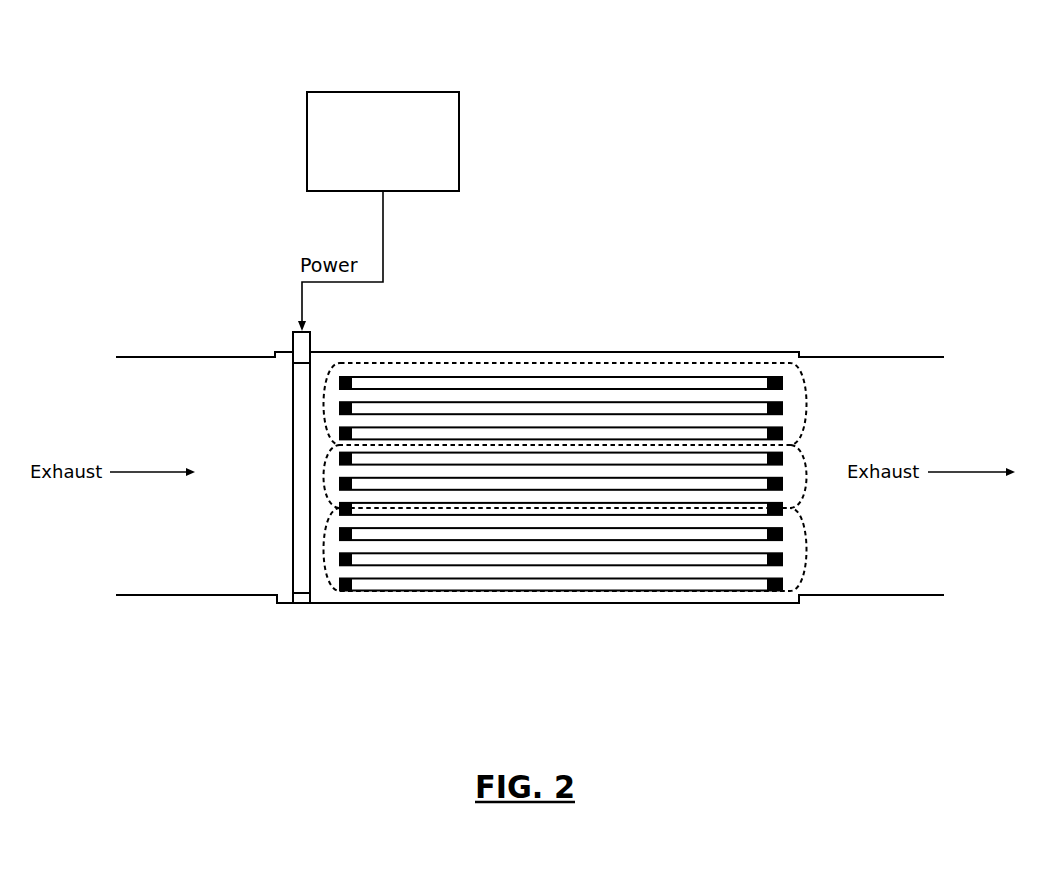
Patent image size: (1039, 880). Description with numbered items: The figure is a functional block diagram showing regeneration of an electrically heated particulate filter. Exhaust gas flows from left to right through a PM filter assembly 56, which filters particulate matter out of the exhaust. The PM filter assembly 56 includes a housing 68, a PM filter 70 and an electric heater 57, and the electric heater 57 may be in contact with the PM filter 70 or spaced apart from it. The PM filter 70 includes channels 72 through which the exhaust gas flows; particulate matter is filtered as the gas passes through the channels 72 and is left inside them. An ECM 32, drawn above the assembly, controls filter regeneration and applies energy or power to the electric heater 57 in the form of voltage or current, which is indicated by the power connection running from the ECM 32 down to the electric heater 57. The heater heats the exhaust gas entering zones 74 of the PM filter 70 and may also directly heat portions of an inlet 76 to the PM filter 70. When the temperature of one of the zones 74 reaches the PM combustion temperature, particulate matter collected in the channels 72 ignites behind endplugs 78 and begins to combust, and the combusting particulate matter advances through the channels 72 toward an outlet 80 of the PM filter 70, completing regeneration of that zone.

The ECM 32 is at (383, 92).
The particulate matter (PM) filter assembly 56 is at (494, 292).
The electric heater 57 is at (302, 408).
The housing 68 is at (628, 351).
The PM filter 70 is at (565, 592).
The channels 72 is at (440, 560).
The zones 74 is at (330, 493).
The inlet 76 is at (330, 468).
The endplugs 78 is at (335, 536).
The outlet 80 is at (793, 428).